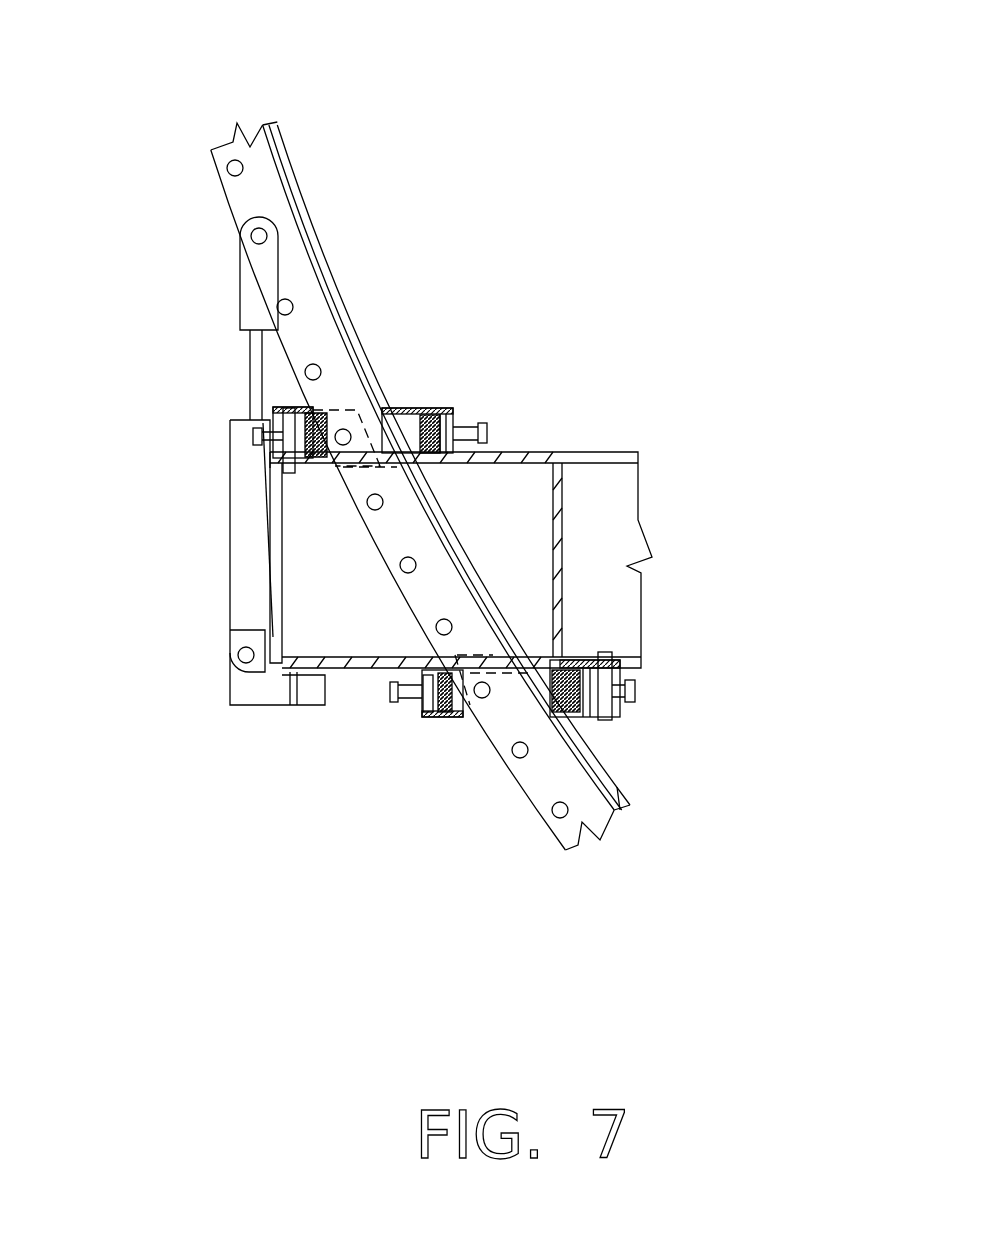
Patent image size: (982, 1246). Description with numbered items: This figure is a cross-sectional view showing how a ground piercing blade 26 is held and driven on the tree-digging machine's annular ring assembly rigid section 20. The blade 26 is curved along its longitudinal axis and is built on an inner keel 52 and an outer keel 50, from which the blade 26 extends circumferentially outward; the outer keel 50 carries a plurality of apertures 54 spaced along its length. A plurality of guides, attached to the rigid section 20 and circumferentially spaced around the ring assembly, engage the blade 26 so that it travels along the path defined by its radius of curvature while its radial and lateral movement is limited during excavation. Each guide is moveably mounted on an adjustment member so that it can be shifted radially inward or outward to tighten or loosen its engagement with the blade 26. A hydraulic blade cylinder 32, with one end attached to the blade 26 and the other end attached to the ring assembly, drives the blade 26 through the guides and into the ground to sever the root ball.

The annular ring assembly rigid section 20 is at (623, 530).
The ground piercing blade 26 is at (290, 163).
The hydraulic blade cylinder 32 is at (230, 557).
The outer keel 50 is at (500, 753).
The inner keel 52 is at (617, 787).
The aperture 54 is at (212, 153).